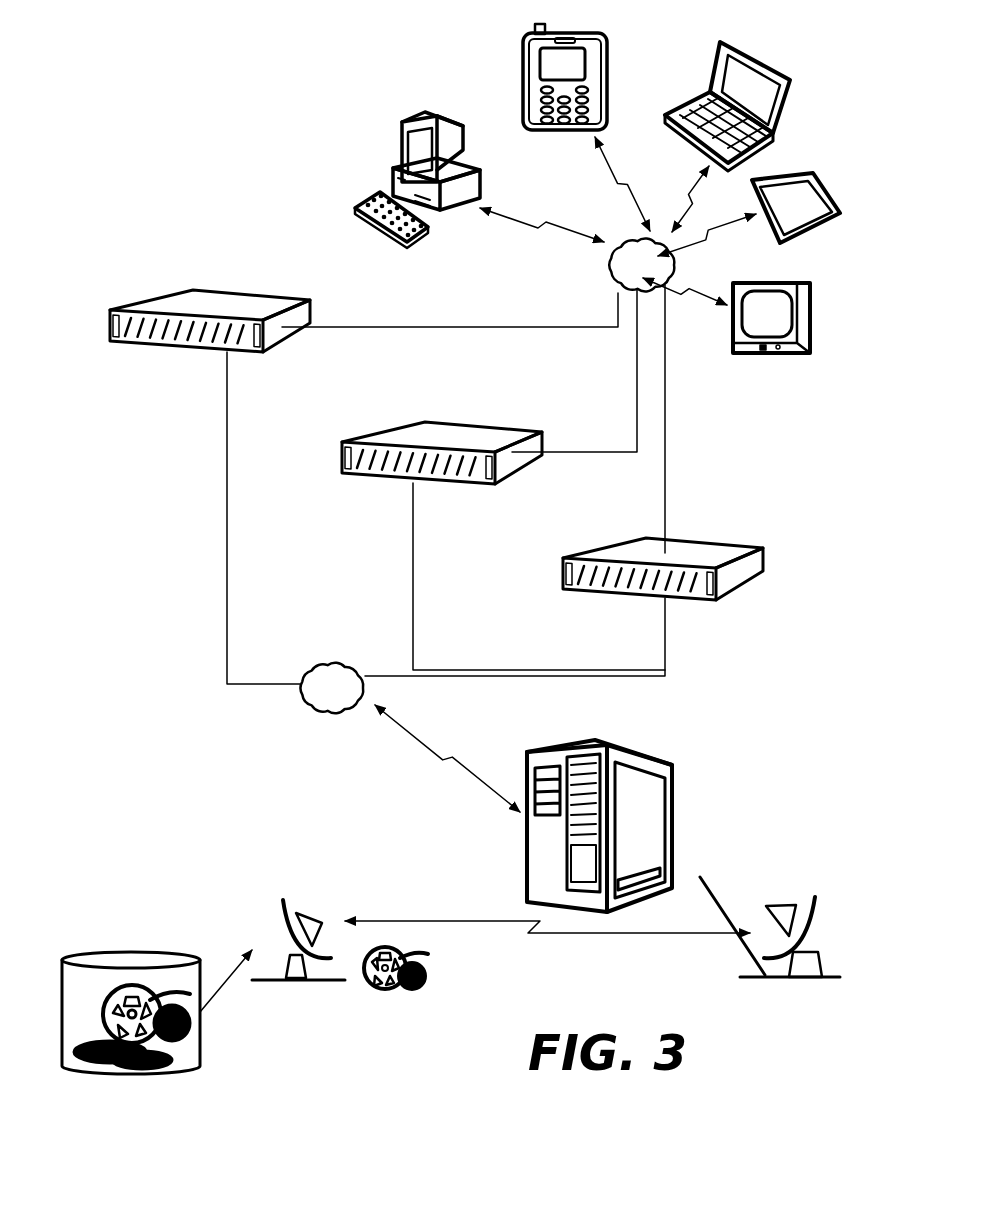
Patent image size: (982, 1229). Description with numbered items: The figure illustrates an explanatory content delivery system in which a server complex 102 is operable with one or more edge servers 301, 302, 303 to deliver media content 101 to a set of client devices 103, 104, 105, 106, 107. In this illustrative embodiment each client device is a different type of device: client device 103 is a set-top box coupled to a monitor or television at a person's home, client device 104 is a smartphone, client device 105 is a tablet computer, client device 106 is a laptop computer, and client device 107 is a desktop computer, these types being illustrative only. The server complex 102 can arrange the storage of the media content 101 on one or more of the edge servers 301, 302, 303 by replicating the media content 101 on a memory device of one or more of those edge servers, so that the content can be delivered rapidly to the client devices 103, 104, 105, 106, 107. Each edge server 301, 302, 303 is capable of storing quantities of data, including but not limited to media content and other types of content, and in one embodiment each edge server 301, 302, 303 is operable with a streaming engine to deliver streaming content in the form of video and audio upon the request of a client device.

The media content 101 is at (385, 990).
The server complex 102 is at (675, 787).
The client device 103 is at (812, 323).
The client device 104 is at (832, 188).
The client device 105 is at (705, 75).
The client device 106 is at (523, 88).
The client device 107 is at (393, 178).
The edge server 301 is at (753, 568).
The edge server 302 is at (340, 456).
The edge server 303 is at (110, 325).